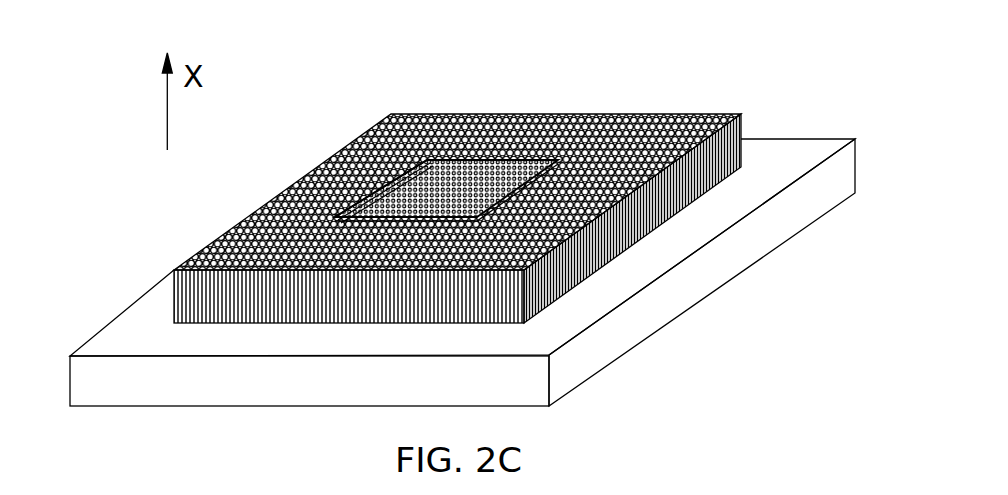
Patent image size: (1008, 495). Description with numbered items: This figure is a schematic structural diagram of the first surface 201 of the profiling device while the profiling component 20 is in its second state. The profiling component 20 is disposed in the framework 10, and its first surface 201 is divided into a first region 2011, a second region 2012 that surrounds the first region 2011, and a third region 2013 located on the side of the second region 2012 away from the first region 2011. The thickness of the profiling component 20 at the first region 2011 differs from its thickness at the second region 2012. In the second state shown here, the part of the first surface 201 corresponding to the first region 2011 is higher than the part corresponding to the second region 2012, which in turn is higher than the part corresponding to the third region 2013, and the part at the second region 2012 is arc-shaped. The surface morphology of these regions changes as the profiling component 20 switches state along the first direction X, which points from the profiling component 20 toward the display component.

The framework 10 is at (767, 253).
The profiling component 20 is at (650, 113).
The first surface 201 is at (547, 17).
The first region 2011 is at (427, 160).
The second region 2012 is at (406, 168).
The third region 2013 is at (392, 174).